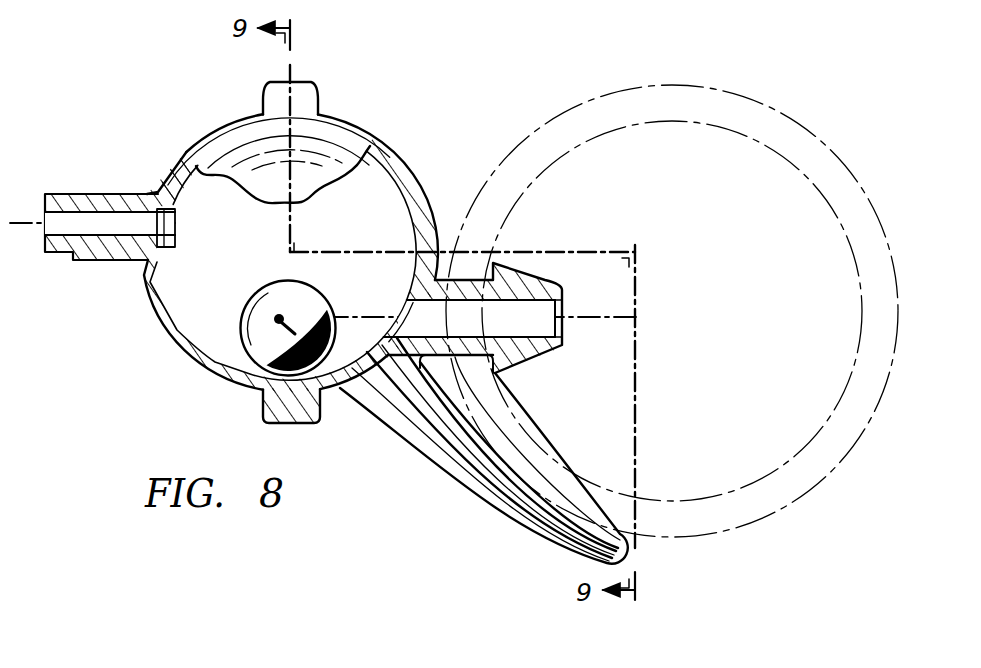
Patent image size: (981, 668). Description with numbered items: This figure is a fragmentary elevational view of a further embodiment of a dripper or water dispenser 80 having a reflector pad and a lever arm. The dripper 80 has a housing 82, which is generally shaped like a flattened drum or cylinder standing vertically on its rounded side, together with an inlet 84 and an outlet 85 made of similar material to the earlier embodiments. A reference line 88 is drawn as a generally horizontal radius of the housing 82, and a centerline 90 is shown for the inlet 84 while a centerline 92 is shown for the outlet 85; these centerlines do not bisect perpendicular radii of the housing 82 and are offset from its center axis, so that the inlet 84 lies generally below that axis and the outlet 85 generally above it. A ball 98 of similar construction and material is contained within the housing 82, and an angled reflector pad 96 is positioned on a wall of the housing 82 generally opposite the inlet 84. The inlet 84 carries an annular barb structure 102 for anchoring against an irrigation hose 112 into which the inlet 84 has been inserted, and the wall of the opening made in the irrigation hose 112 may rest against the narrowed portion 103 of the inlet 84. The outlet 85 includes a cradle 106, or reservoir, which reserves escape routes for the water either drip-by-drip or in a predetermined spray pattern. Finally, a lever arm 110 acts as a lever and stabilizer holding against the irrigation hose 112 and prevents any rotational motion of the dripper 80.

The dripper 80 is at (399, 106).
The housing 82 is at (324, 113).
The inlet 84 is at (549, 250).
The outlet 85 is at (85, 192).
The reference line 88 is at (345, 250).
The centerline 90 is at (368, 316).
The centerline 92 is at (214, 226).
The angled reflector pad 96 is at (190, 312).
The ball 98 is at (275, 285).
The annular barb structure 102 is at (504, 378).
The narrowed portion 103 is at (441, 256).
The cradle 106 is at (184, 212).
The lever arm 110 is at (458, 470).
The irrigation hose 112 is at (810, 493).